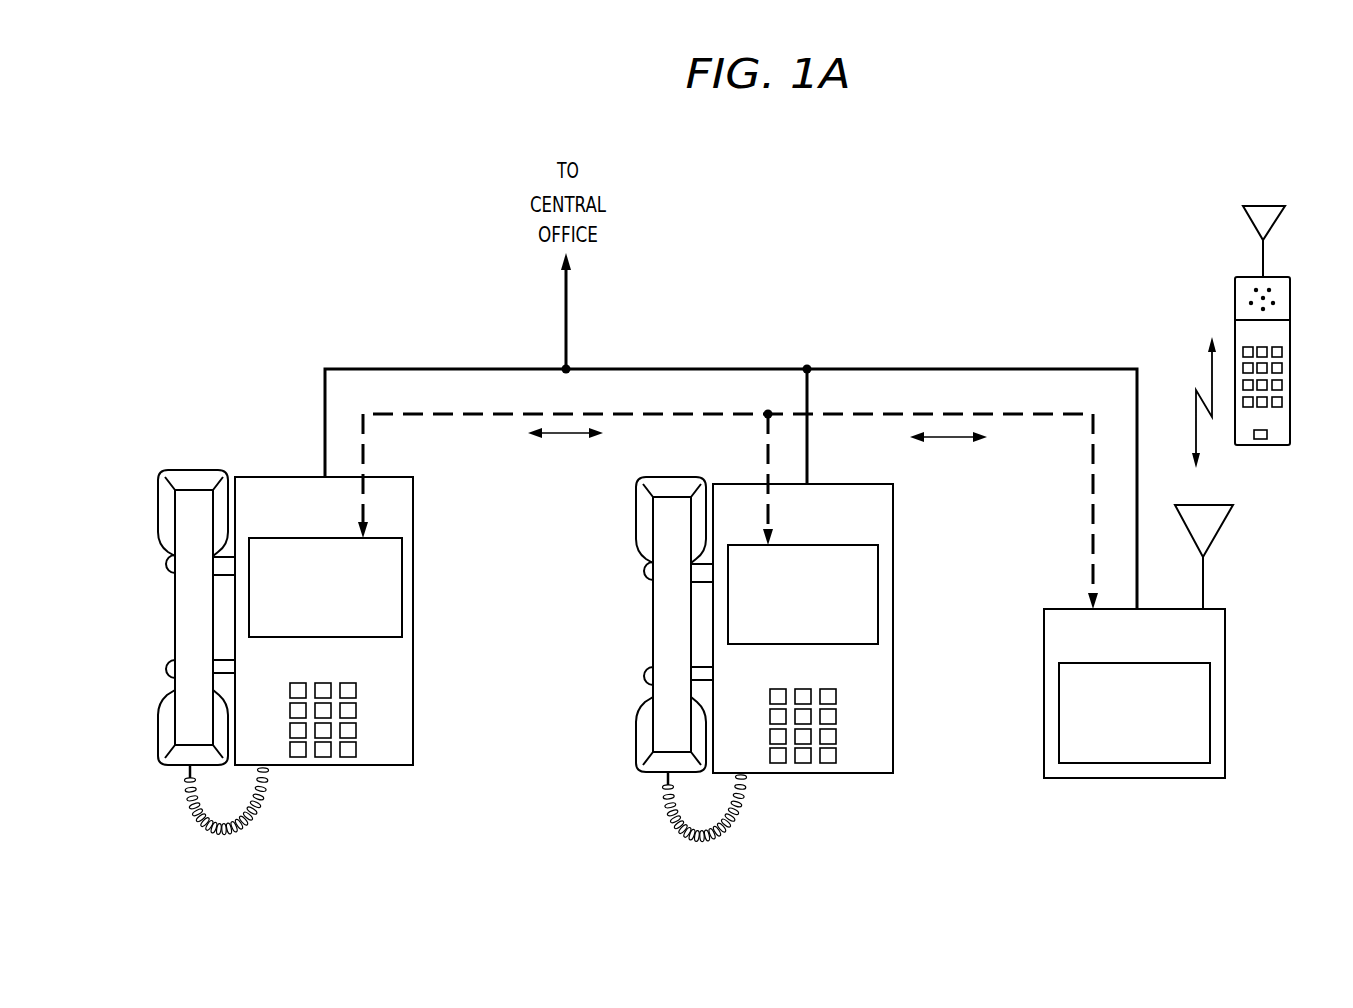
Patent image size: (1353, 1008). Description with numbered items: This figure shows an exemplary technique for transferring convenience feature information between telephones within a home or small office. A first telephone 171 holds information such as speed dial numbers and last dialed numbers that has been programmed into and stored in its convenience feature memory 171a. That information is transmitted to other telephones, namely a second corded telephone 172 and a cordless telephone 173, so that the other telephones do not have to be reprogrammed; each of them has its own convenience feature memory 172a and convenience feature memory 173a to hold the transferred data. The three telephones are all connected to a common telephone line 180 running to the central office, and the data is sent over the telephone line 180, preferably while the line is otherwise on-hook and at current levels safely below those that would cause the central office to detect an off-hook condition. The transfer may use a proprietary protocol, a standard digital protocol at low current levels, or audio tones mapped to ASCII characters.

The first telephone 171 is at (413, 707).
The convenience feature memory 171a is at (402, 591).
The telephone 172 is at (893, 713).
The convenience feature memory 172a is at (878, 598).
The cordless telephone 173 is at (1225, 651).
The convenience feature memory 173a is at (1210, 716).
The telephone line 180 is at (971, 369).